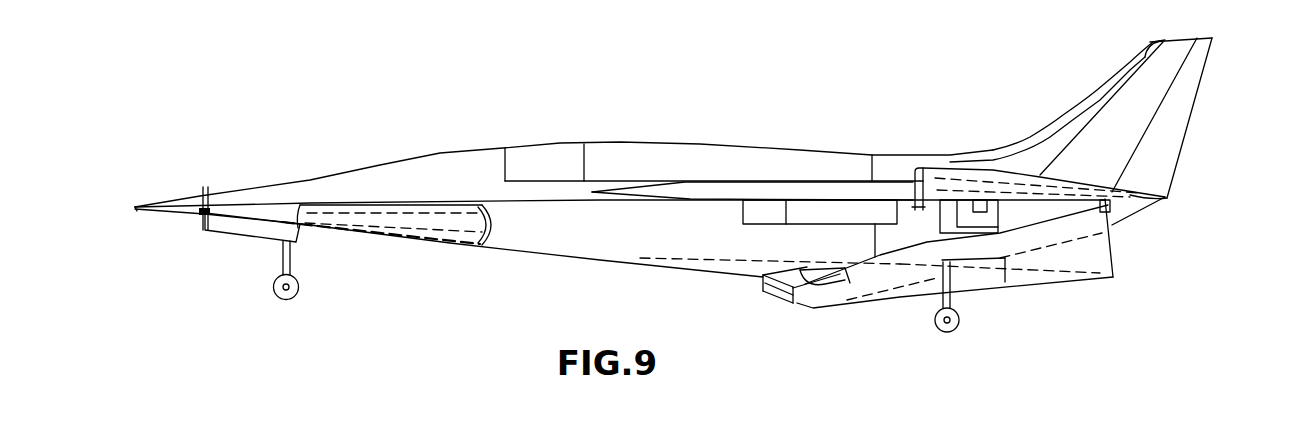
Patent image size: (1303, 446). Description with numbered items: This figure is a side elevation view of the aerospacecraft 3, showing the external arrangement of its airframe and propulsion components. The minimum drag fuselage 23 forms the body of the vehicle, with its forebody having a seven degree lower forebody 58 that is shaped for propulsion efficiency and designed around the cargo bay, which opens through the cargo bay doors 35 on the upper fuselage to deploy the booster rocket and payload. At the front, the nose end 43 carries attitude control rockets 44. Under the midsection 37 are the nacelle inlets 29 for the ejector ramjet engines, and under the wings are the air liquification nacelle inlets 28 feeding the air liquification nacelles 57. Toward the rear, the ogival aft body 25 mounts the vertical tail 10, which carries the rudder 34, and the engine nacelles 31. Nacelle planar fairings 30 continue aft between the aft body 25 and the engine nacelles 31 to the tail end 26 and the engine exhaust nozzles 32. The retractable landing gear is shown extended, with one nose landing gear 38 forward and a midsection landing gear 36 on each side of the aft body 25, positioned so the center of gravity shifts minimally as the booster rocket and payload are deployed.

The aerospacecraft 3 is at (332, 145).
The vertical tail 10 is at (1098, 88).
The fuselage 23 is at (432, 205).
The aft body 25 is at (1013, 172).
The tail end 26 is at (1137, 218).
The air liquification nacelle inlet 28 is at (750, 225).
The nacelle inlet 29 is at (772, 295).
The nacelle planar fairing 30 is at (808, 287).
The engine nacelle 31 is at (1043, 285).
The engine exhaust nozzle 32 is at (1118, 252).
The rudder 34 is at (1183, 140).
The cargo bay door 35 is at (632, 155).
The midsection landing gear 36 is at (957, 325).
The midsection 37 is at (592, 240).
The nose landing gear 38 is at (273, 287).
The nose end 43 is at (140, 212).
The attitude control rocket 44 is at (202, 203).
The air liquification nacelle 57 is at (828, 210).
The lower forebody 58 is at (415, 242).